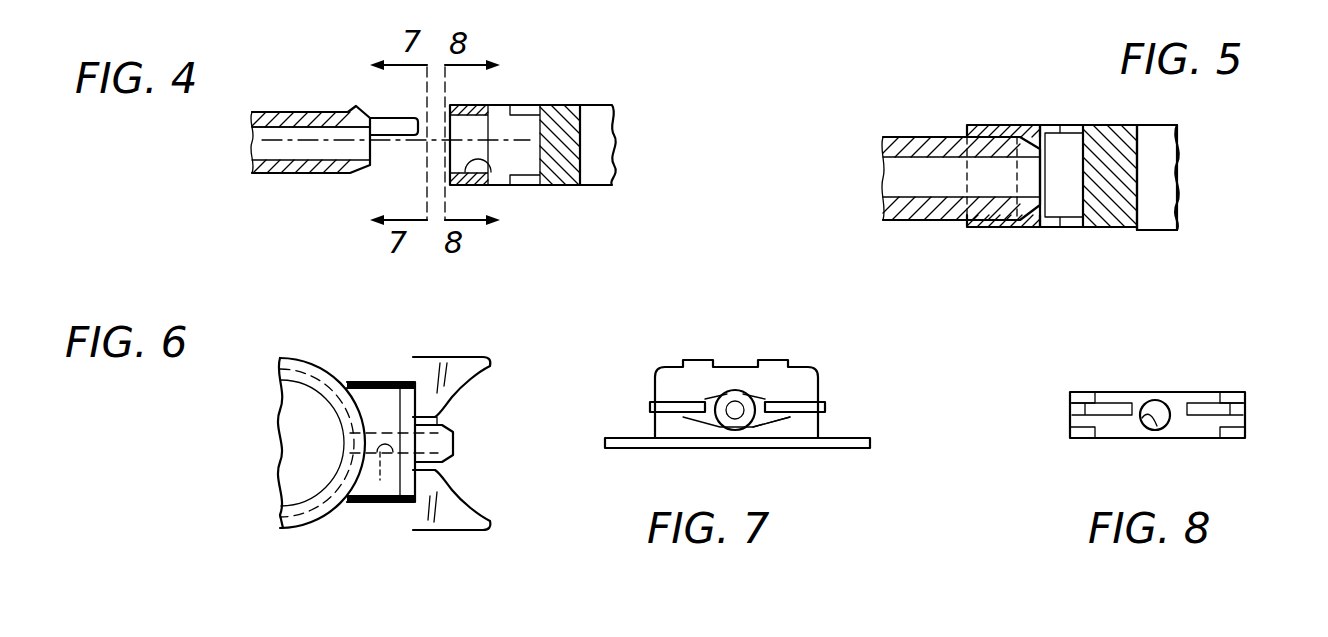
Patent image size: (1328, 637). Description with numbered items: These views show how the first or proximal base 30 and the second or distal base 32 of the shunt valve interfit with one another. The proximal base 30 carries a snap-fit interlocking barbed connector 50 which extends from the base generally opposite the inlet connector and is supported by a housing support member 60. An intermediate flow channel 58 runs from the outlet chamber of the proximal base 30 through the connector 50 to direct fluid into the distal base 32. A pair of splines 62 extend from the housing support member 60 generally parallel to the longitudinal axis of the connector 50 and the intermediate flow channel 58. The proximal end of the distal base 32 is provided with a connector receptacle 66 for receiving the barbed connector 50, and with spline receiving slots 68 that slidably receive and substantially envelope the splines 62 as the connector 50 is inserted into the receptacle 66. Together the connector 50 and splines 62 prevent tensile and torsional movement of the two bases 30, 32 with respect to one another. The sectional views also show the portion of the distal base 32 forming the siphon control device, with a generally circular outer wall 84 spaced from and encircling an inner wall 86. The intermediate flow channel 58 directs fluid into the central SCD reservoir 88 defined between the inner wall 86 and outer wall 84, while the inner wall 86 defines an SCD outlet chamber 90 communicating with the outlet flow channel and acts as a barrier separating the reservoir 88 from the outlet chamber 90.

In FIG. 4, the first or proximal base 30 is at (288, 181).
In FIG. 5, the first or proximal base 30 is at (944, 132).
In FIG. 6, the first or proximal base 30 is at (350, 365).
In FIG. 7, the first or proximal base 30 is at (800, 368).
In FIG. 4, the second or distal base 32 is at (570, 104).
In FIG. 5, the second or distal base 32 is at (1184, 150).
In FIG. 8, the second or distal base 32 is at (1185, 387).
In FIG. 4, the snap-fit interlocking barbed connector 50 is at (298, 112).
In FIG. 5, the snap-fit interlocking barbed connector 50 is at (980, 210).
In FIG. 6, the snap-fit interlocking barbed connector 50 is at (448, 421).
In FIG. 7, the snap-fit interlocking barbed connector 50 is at (730, 426).
In FIG. 4, the intermediate flow channel 58 is at (262, 152).
In FIG. 6, the intermediate flow channel 58 is at (379, 505).
In FIG. 7, the intermediate flow channel 58 is at (735, 405).
In FIG. 6, the housing support member 60 is at (385, 400).
In FIG. 7, the housing support member 60 is at (765, 420).
In FIG. 4, the splines 62 is at (388, 118).
In FIG. 6, the splines 62 is at (462, 357).
In FIG. 7, the splines 62 is at (651, 405).
In FIG. 4, the connector receptacle 66 is at (490, 165).
In FIG. 8, the connector receptacle 66 is at (1153, 429).
In FIG. 8, the spline receiving slots 68 is at (1078, 408).
In FIG. 5, the outer wall 84 is at (1030, 125).
In FIG. 5, the inner wall 86 is at (1113, 205).
In FIG. 5, the central SCD reservoir 88 is at (1067, 147).
In FIG. 5, the SCD outlet chamber 90 is at (1160, 195).